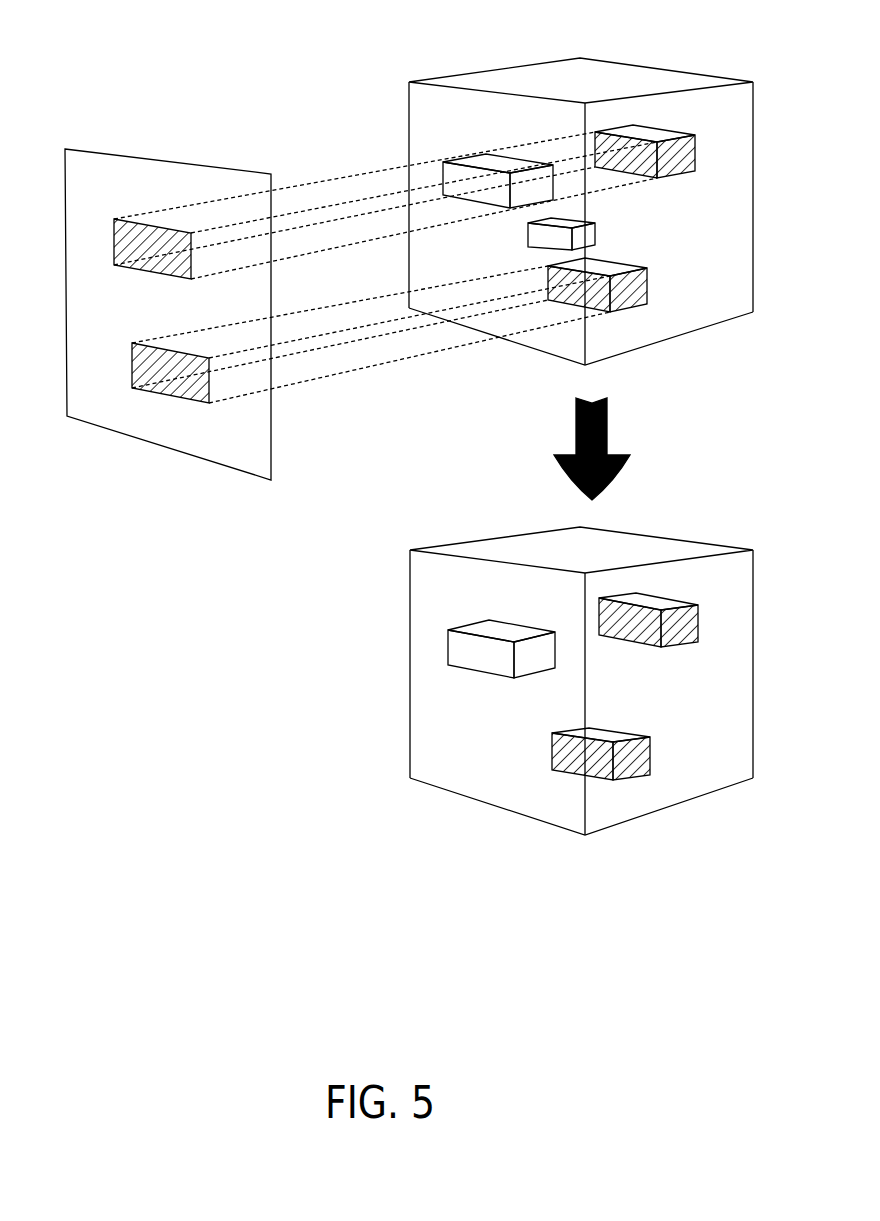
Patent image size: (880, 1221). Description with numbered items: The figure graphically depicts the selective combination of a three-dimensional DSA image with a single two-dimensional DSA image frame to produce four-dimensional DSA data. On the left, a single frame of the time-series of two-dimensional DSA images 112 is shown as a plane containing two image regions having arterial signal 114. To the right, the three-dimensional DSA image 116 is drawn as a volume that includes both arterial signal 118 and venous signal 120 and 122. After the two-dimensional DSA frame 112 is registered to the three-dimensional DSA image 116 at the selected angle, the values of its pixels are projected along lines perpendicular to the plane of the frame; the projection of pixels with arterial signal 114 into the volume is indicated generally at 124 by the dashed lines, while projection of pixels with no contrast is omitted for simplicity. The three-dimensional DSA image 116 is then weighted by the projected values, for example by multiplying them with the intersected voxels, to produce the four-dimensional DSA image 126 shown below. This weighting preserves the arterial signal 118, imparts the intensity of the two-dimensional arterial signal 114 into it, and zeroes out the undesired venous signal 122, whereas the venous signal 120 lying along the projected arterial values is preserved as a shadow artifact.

The 2D-DSA image frame 112 is at (128, 160).
The arterial signal 114 is at (128, 267).
The 3D-DSA image 116 is at (655, 78).
The arterial signal 118 is at (684, 171).
The venous signal 120 is at (473, 159).
The venous signal 122 is at (595, 236).
The projection of pixels with arterial signal 124 is at (312, 151).
The 4D-DSA image 126 is at (702, 550).